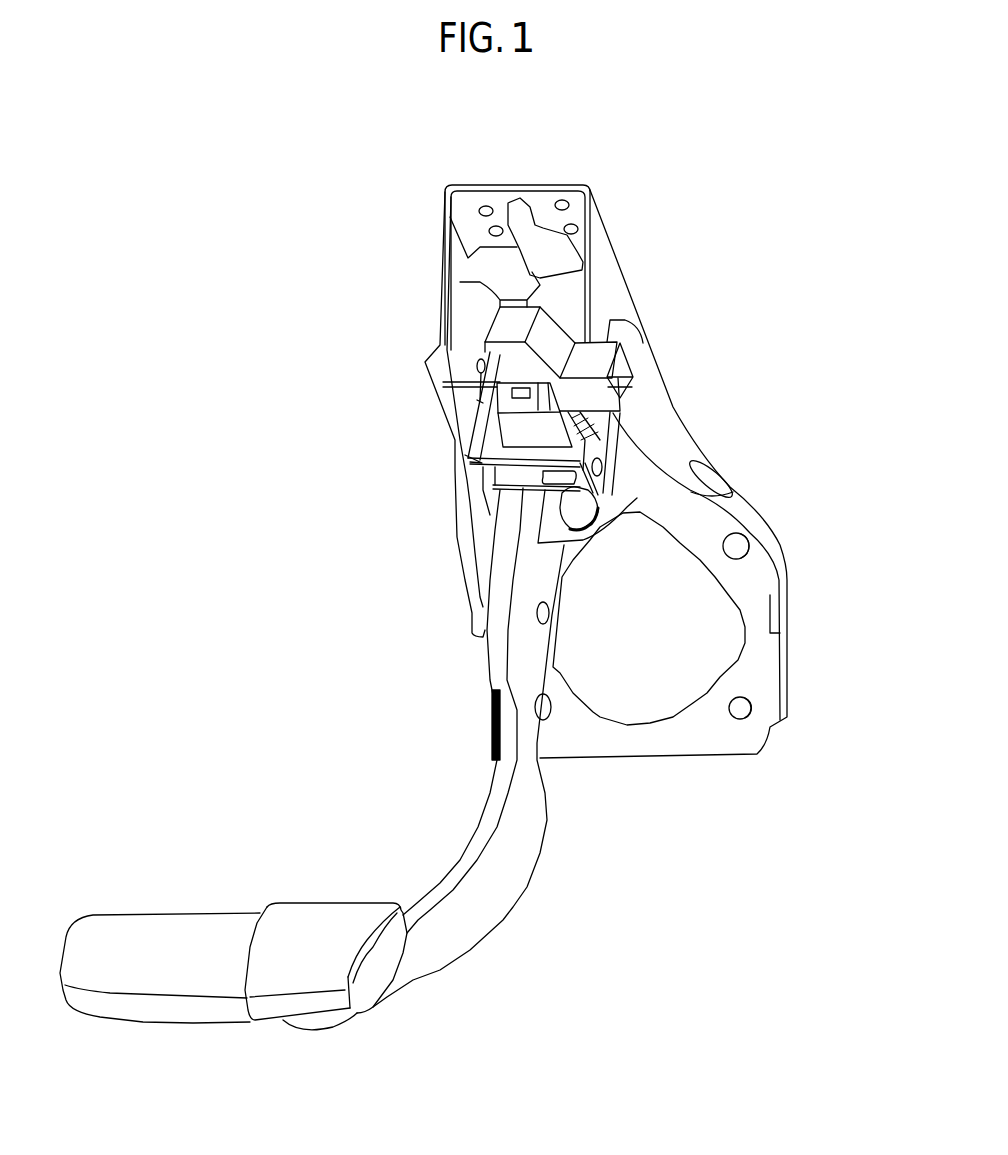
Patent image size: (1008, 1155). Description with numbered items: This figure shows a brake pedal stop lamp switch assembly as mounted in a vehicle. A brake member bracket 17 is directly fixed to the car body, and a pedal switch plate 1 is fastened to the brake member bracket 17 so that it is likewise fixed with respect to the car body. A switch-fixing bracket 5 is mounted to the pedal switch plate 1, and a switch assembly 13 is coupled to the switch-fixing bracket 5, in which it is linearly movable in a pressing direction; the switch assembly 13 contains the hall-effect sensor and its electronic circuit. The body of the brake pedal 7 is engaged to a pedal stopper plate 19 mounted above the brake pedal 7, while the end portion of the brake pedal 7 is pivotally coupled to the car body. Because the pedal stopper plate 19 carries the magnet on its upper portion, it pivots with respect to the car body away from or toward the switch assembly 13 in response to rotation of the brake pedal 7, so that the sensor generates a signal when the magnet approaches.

The pedal switch plate 1 is at (468, 440).
The switch-fixing bracket 5 is at (553, 430).
The brake pedal 7 is at (517, 850).
The switch assembly 13 is at (548, 335).
The brake member bracket 17 is at (773, 558).
The pedal stopper plate 19 is at (498, 510).